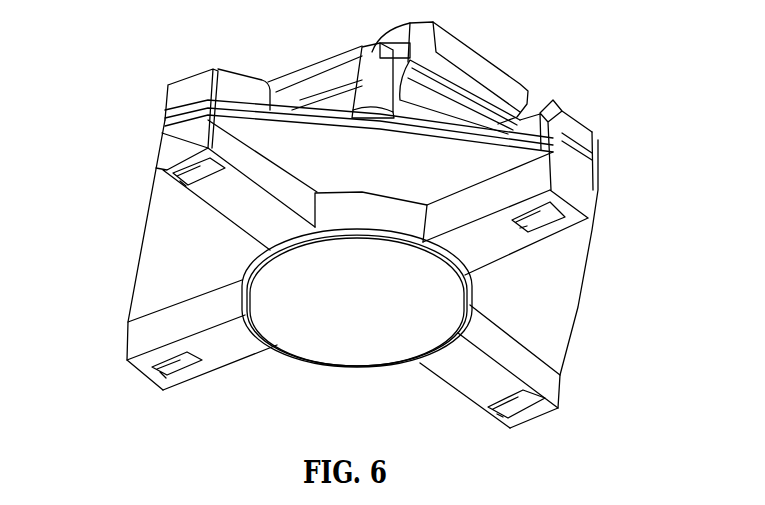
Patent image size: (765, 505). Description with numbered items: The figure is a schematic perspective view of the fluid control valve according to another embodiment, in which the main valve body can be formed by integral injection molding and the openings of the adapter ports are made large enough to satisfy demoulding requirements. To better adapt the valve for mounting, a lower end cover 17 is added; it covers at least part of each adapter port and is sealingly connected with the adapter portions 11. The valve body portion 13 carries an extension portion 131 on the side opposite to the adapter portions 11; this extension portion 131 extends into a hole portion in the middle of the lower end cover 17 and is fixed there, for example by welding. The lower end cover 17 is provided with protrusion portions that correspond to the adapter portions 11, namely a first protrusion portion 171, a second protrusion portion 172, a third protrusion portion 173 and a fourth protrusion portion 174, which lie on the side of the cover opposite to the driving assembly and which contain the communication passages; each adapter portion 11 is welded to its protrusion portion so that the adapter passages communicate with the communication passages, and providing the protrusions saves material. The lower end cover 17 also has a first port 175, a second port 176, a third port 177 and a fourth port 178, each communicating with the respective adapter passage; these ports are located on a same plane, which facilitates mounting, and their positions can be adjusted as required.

The adapter portion 11 is at (540, 132).
The valve body portion 13 is at (357, 306).
The extension portion 131 is at (347, 210).
The lower end cover 17 is at (273, 140).
The first protrusion portion 171 is at (487, 243).
The second protrusion portion 172 is at (473, 375).
The third protrusion portion 173 is at (233, 397).
The fourth protrusion portion 174 is at (223, 210).
The first port 175 is at (550, 218).
The second port 176 is at (517, 402).
The third port 177 is at (177, 362).
The fourth port 178 is at (197, 173).